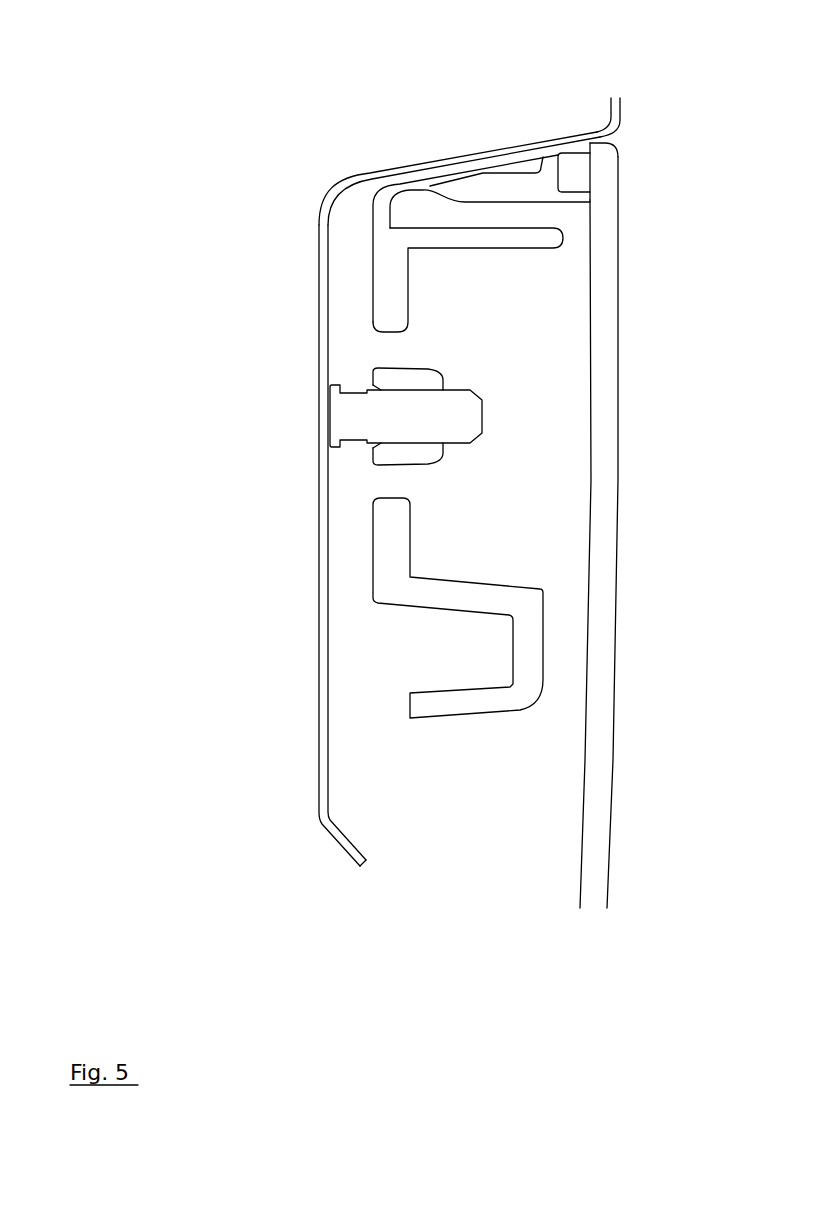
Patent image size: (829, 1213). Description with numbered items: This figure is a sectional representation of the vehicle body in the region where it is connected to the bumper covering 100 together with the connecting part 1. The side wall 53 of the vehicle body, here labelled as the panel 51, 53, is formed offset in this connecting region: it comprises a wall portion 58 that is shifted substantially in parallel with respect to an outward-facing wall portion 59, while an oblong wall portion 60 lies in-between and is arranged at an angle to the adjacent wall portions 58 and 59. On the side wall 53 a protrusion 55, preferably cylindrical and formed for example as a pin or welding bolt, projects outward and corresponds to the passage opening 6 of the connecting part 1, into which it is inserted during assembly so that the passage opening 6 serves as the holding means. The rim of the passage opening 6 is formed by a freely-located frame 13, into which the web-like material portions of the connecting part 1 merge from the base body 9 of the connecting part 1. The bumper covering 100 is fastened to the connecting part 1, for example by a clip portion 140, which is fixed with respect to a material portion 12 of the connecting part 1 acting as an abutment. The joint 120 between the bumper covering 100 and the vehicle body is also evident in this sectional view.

The connecting part 1 is at (451, 614).
The passage opening 6 is at (422, 386).
The base body 9 is at (393, 557).
The material portion 12 is at (546, 142).
The frame 13 is at (402, 380).
The panel 51 is at (458, 439).
The side wall 53 is at (458, 439).
The protrusion 55 is at (449, 407).
The wall portion 58 is at (320, 550).
The wall portion 59 is at (620, 115).
The wall portion 60 is at (481, 190).
The bumper covering 100 is at (642, 521).
The joint 120 is at (628, 142).
The clip portion 140 is at (523, 190).